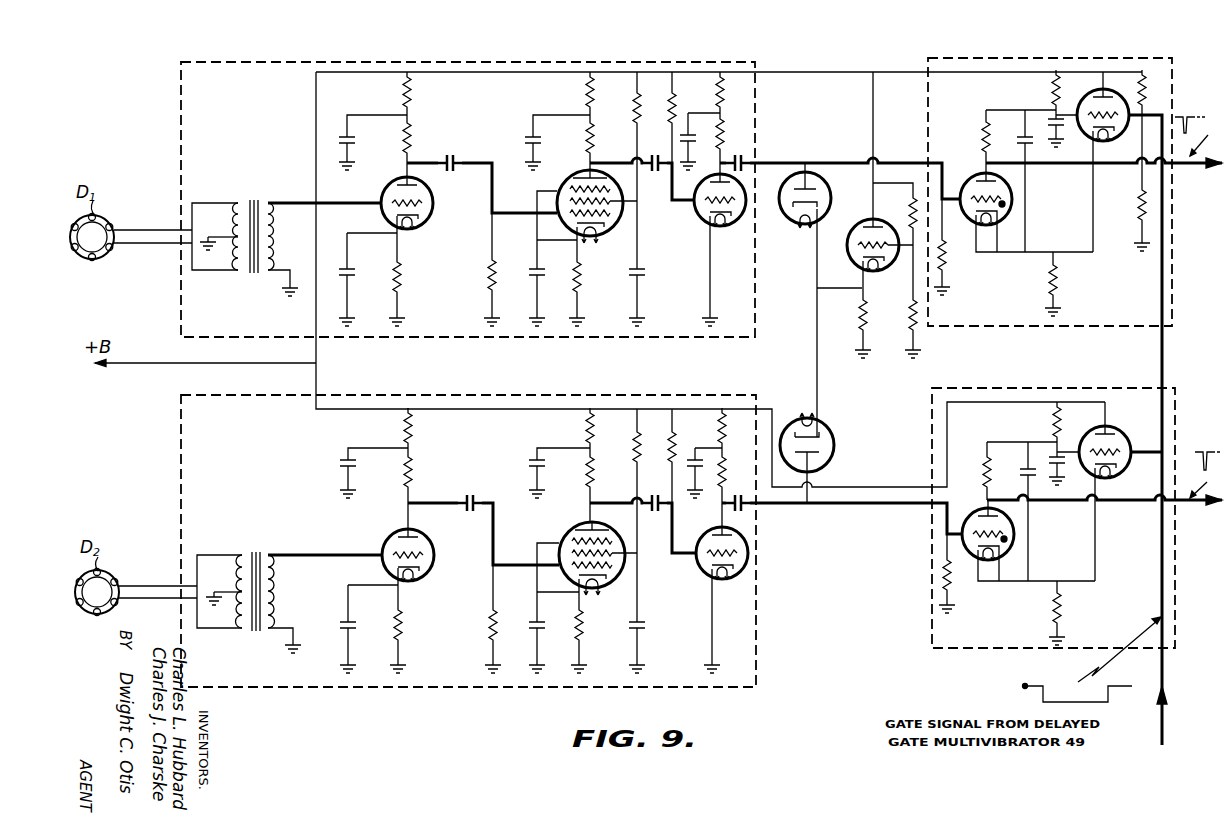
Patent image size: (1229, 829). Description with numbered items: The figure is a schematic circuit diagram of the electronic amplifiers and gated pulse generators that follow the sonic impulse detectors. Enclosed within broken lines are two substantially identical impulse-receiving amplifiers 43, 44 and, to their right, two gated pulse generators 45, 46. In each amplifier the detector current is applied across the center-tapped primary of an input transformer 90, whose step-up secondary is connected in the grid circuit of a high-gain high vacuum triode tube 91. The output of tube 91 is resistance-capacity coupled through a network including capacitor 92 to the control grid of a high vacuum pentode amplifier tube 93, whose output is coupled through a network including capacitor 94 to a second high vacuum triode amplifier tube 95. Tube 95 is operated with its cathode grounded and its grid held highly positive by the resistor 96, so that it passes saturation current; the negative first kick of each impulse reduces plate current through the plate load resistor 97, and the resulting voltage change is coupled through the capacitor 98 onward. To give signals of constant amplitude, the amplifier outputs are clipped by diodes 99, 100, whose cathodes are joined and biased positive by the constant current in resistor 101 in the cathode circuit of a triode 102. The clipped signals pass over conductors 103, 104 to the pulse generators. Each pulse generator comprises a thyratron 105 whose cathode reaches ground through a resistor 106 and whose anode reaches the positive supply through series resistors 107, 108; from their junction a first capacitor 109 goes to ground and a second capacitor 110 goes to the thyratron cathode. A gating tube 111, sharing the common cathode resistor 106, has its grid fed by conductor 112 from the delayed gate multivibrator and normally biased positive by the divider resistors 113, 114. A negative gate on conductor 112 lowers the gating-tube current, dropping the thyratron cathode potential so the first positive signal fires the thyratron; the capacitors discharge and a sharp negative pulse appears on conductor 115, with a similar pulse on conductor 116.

The amplifier 43 is at (181, 122).
The amplifier 44 is at (181, 460).
The gated pulse generator 45 is at (928, 126).
The gated pulse generator 46 is at (932, 590).
The input transformer 90 is at (258, 202).
The high vacuum triode tube 91 is at (432, 200).
The capacitor 92 is at (450, 155).
The high vacuum pentode amplifier tube 93 is at (573, 177).
The capacitor 94 is at (652, 167).
The high vacuum triode amplifier tube 95 is at (696, 210).
The resistor 96 is at (672, 108).
The plate load resistor 97 is at (722, 136).
The capacitor 98 is at (756, 162).
The diode 99 is at (826, 194).
The diode 100 is at (832, 448).
The resistor 101 is at (861, 323).
The triode 102 is at (849, 228).
The conductor 103 is at (849, 161).
The conductor 104 is at (852, 503).
The thyratron 105 is at (963, 181).
The resistor 106 is at (1054, 281).
The resistor 107 is at (985, 140).
The resistor 108 is at (1054, 92).
The first capacitor 109 is at (1060, 108).
The second capacitor 110 is at (1027, 142).
The gating tube 111 is at (1109, 94).
The conductor 112 is at (1162, 362).
The resistor 113 is at (1147, 88).
The resistor 114 is at (1142, 209).
The conductor 115 is at (1192, 164).
The conductor 116 is at (1192, 506).